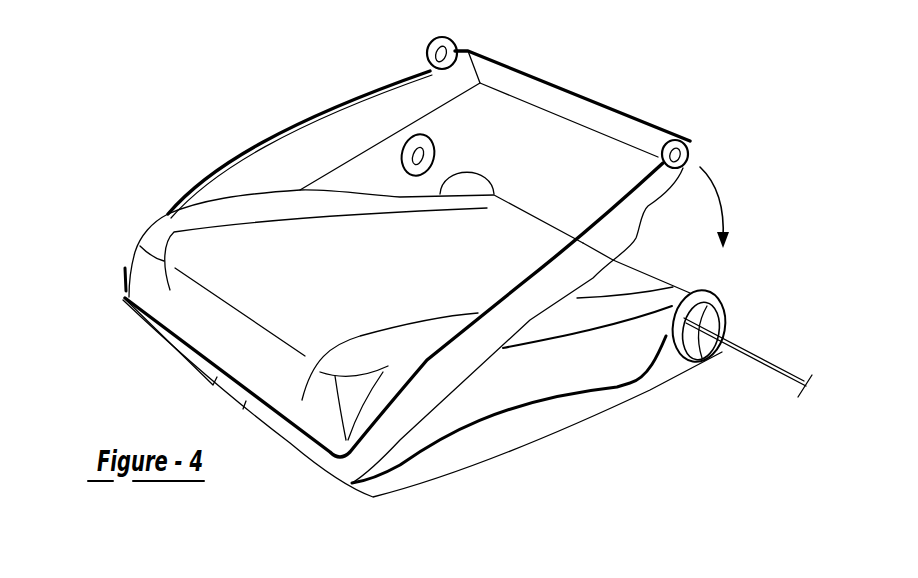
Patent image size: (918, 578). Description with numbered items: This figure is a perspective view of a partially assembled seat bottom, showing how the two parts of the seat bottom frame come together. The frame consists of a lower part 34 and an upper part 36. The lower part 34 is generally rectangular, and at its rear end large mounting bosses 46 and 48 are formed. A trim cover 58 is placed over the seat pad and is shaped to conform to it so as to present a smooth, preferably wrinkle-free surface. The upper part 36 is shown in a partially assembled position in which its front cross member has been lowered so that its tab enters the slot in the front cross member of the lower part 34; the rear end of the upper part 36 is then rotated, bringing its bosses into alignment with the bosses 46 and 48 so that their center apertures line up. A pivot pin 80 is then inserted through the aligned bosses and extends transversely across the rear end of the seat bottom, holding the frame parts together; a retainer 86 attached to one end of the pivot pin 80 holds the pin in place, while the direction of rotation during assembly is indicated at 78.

The lower part 34 is at (502, 458).
The upper part 36 is at (582, 90).
The mounting boss 46 is at (481, 177).
The mounting boss 48 is at (700, 291).
The trim cover 58 is at (168, 214).
The rotation direction arrow 78 is at (720, 203).
The pivot pin 80 is at (743, 355).
The retainer 86 is at (427, 134).